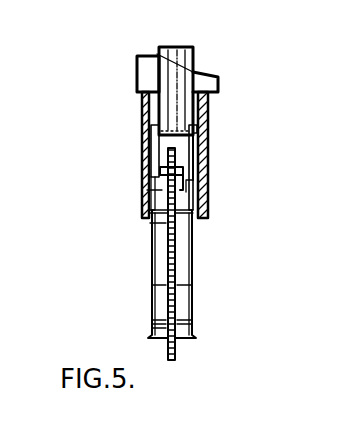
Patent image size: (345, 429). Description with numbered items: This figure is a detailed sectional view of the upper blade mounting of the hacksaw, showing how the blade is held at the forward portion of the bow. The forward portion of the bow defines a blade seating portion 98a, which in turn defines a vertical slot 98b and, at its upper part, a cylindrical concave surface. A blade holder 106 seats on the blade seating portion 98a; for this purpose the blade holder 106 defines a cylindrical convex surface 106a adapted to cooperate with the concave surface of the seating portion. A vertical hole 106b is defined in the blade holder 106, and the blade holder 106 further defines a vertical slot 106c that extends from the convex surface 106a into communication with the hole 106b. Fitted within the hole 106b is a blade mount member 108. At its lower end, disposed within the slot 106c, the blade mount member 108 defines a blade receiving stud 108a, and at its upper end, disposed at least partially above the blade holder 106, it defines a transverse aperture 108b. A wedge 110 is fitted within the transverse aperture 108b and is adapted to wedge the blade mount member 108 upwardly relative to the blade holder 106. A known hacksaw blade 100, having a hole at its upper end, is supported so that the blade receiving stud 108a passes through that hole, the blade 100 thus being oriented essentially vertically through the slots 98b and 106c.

The blade seating portion 98a is at (165, 252).
The vertical slot 98b is at (178, 257).
The hacksaw blade 100 is at (192, 316).
The blade holder 106 is at (212, 158).
The cylindrical convex surface 106a is at (200, 226).
The vertical hole 106b is at (164, 111).
The vertical slot 106c is at (155, 199).
The blade mount member 108 is at (193, 72).
The blade receiving stud 108a is at (161, 172).
The transverse aperture 108b is at (157, 55).
The wedge 110 is at (143, 78).